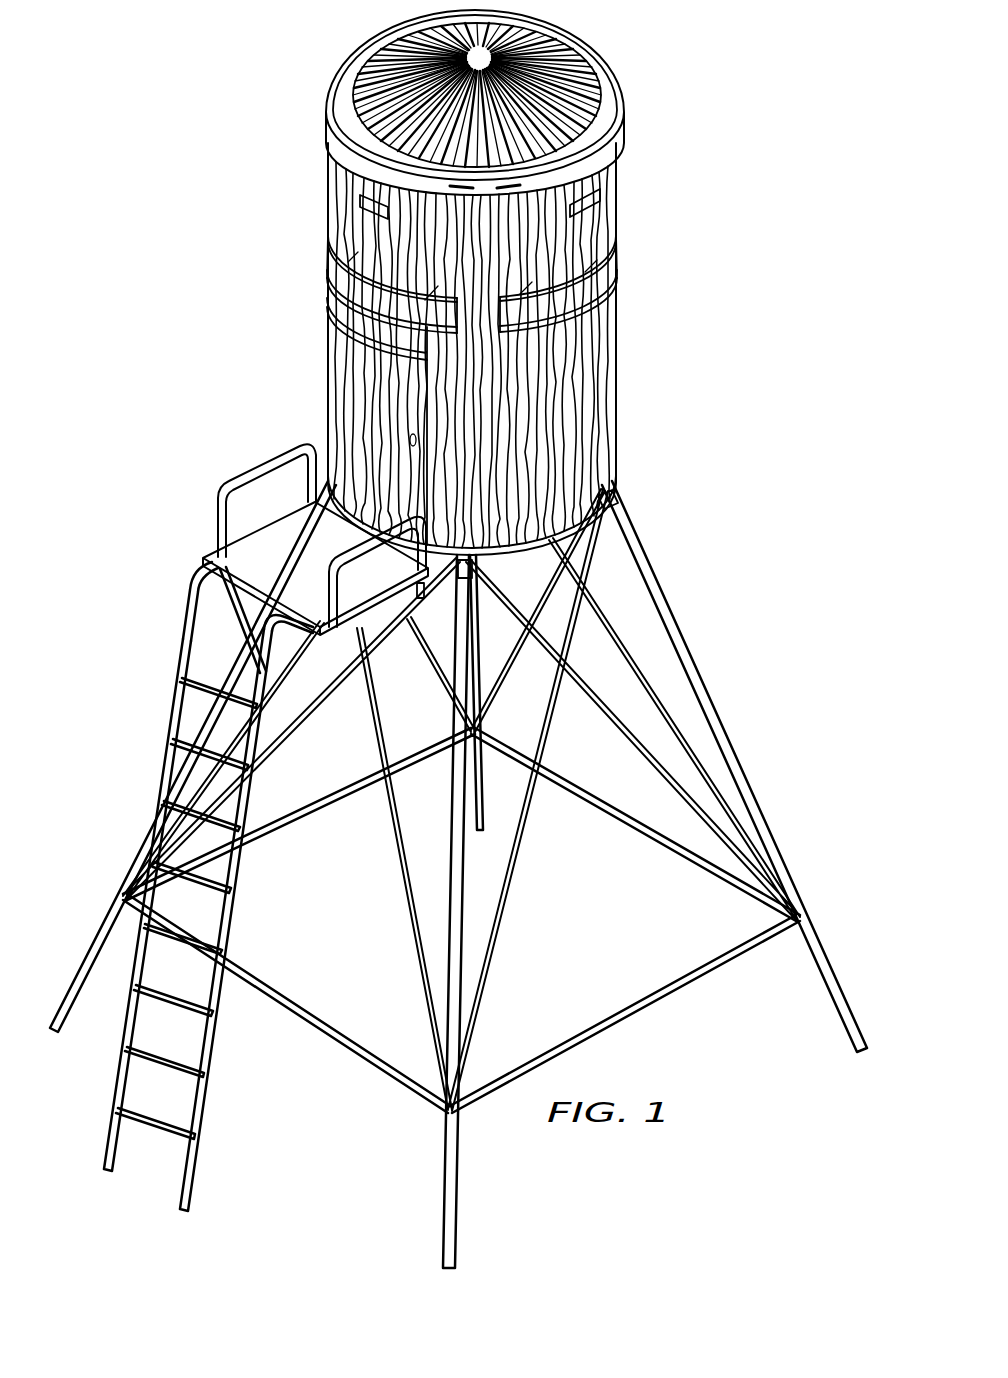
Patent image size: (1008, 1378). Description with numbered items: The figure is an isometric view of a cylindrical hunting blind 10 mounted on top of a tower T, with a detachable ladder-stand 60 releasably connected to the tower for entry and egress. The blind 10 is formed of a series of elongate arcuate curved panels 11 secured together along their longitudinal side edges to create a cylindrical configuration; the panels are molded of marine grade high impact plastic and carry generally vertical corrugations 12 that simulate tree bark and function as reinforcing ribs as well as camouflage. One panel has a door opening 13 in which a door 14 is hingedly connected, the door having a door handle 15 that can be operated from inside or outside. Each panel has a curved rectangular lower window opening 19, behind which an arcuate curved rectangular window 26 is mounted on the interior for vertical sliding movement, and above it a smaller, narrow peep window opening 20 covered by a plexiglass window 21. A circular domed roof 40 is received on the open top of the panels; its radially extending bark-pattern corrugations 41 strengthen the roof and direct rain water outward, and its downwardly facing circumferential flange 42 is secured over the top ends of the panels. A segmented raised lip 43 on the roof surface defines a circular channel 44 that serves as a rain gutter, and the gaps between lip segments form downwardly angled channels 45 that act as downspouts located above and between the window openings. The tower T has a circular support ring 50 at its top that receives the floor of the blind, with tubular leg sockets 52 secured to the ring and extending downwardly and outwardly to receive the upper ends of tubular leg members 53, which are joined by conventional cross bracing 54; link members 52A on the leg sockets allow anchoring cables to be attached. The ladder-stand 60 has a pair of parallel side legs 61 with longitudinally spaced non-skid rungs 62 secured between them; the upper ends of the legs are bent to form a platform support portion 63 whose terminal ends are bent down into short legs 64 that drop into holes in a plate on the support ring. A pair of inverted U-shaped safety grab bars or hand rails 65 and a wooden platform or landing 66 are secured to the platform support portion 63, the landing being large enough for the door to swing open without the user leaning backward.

The hunting blind 10 is at (477, 282).
The elongate arcuate curved panels 11 is at (475, 349).
The corrugations 12 is at (597, 360).
The door opening 13 is at (336, 312).
The door 14 is at (336, 366).
The door handle 15 is at (403, 437).
The lower window opening 19 is at (473, 284).
The arcuate curved rectangular window 26 is at (340, 250).
The peep window opening 20 is at (479, 211).
The plexiglass window 21 is at (362, 212).
The domed roof 40 is at (476, 102).
The corrugations 41 is at (393, 50).
The circumferential flange 42 is at (618, 166).
The raised ridge or lip 43 is at (340, 118).
The channel 44 is at (343, 97).
The downwardly angled channels 45 is at (483, 178).
The circular support ring 50 is at (458, 868).
The tubular leg sockets 52 is at (583, 554).
The link members 52A is at (583, 537).
The tubular leg members 53 is at (699, 682).
The cross bracing 54 is at (338, 790).
The detachable ladder-stand 60 is at (257, 824).
The side legs 61 is at (178, 699).
The rungs 62 is at (172, 772).
The platform support portion 63 is at (222, 595).
The short legs 64 is at (421, 599).
The safety grab bars or hand rails 65 is at (281, 466).
The platform or landing 66 is at (262, 571).
The tower T is at (458, 868).